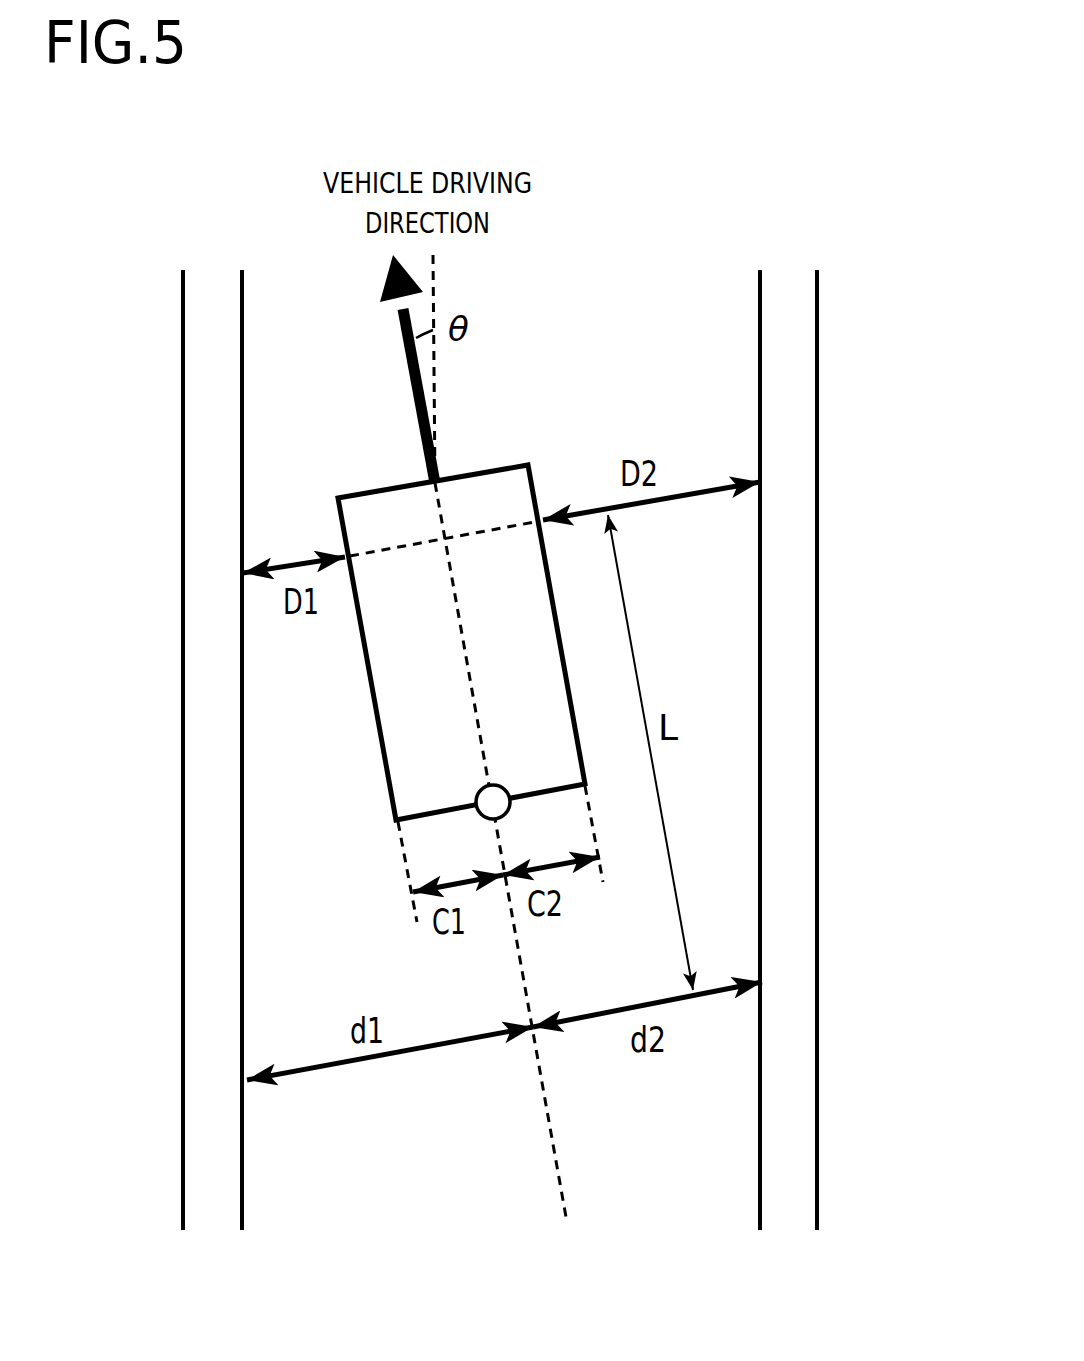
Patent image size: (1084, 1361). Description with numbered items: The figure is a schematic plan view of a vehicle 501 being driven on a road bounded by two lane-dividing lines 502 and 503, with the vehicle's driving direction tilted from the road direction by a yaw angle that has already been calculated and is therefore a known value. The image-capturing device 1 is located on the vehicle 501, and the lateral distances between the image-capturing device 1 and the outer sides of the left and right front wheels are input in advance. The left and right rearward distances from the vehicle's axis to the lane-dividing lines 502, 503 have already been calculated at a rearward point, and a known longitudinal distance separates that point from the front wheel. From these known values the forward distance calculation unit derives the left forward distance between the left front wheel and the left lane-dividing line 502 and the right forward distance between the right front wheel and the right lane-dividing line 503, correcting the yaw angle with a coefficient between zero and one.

The image-capturing device 1 is at (412, 787).
The vehicle 501 is at (490, 601).
The lane-dividing line 502 is at (147, 750).
The lane-dividing line 503 is at (860, 750).